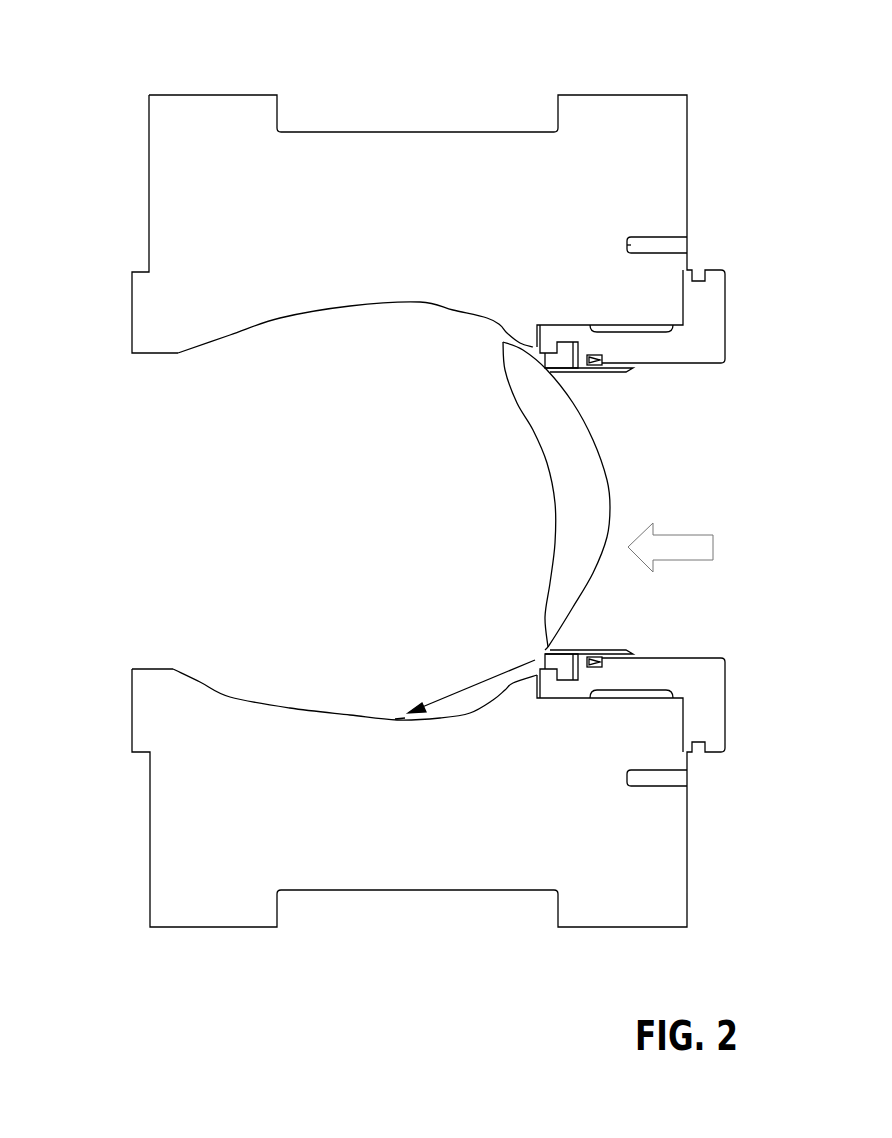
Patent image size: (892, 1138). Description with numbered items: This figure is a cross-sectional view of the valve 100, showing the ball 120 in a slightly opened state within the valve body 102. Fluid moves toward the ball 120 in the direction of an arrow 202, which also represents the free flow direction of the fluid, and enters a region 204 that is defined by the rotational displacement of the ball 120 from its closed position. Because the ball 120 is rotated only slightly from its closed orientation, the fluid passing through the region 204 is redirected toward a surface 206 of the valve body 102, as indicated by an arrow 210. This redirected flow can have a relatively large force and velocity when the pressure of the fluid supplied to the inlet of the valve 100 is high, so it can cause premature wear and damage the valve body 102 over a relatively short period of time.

The valve 100 is at (137, 60).
The valve body 102 is at (437, 175).
The ball 120 is at (578, 483).
The arrow 202 is at (707, 547).
The region 204 is at (550, 648).
The surface 206 is at (400, 718).
The arrow 210 is at (508, 672).